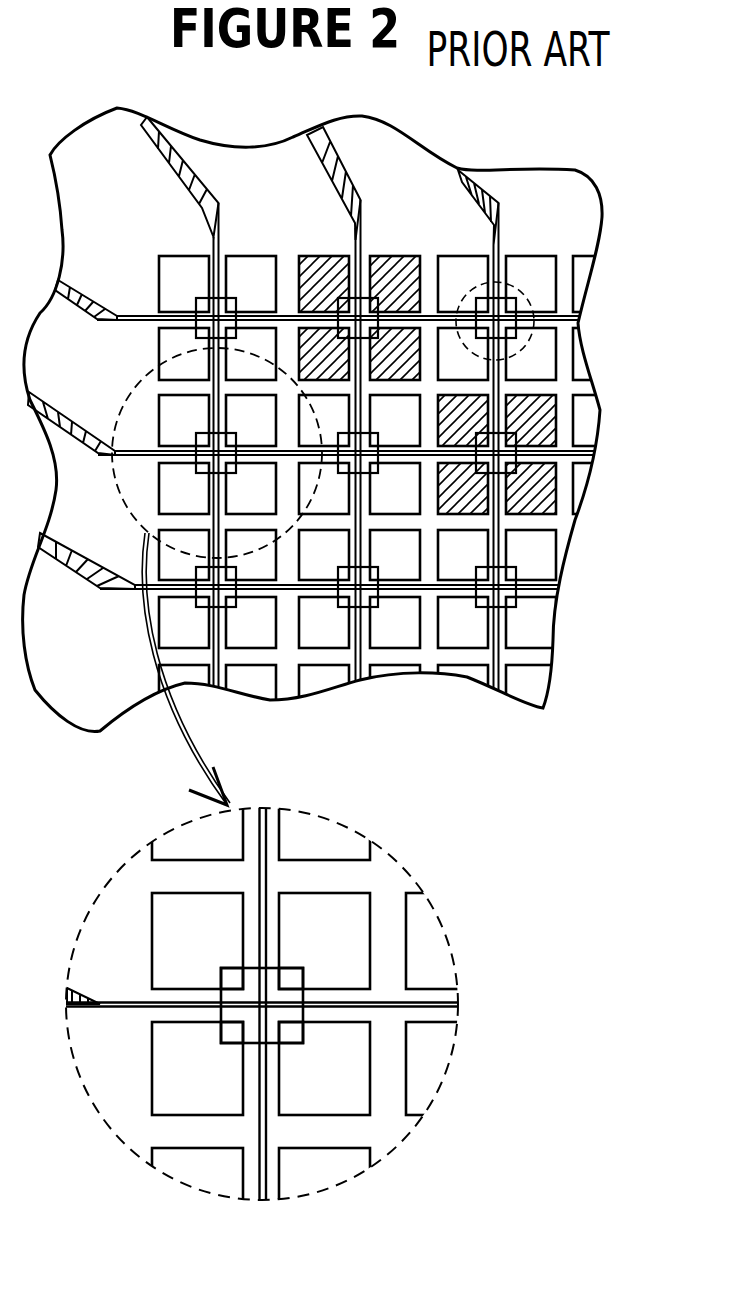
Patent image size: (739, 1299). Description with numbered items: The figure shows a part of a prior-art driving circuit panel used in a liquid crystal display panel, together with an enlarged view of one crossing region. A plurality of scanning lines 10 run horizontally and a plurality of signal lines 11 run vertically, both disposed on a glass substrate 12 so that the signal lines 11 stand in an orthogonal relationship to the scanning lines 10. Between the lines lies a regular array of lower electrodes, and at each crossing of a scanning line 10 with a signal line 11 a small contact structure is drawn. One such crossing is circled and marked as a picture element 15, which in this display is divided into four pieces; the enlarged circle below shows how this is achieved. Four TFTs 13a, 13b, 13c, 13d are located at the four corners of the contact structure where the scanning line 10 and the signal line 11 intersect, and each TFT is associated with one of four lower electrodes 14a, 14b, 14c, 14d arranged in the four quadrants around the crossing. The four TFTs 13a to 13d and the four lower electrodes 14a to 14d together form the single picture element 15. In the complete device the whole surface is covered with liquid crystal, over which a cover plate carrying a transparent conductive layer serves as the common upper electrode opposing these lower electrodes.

The scanning line 10 is at (83, 310).
The signal line 11 is at (323, 133).
The glass substrate 12 is at (583, 212).
The TFT 13a is at (227, 980).
The TFT 13b is at (295, 979).
The TFT 13c is at (295, 1035).
The TFT 13d is at (227, 1035).
The lower electrode 14a is at (197, 941).
The lower electrode 14b is at (324, 941).
The lower electrode 14c is at (324, 1068).
The lower electrode 14d is at (197, 1068).
The picture element 15 is at (510, 291).